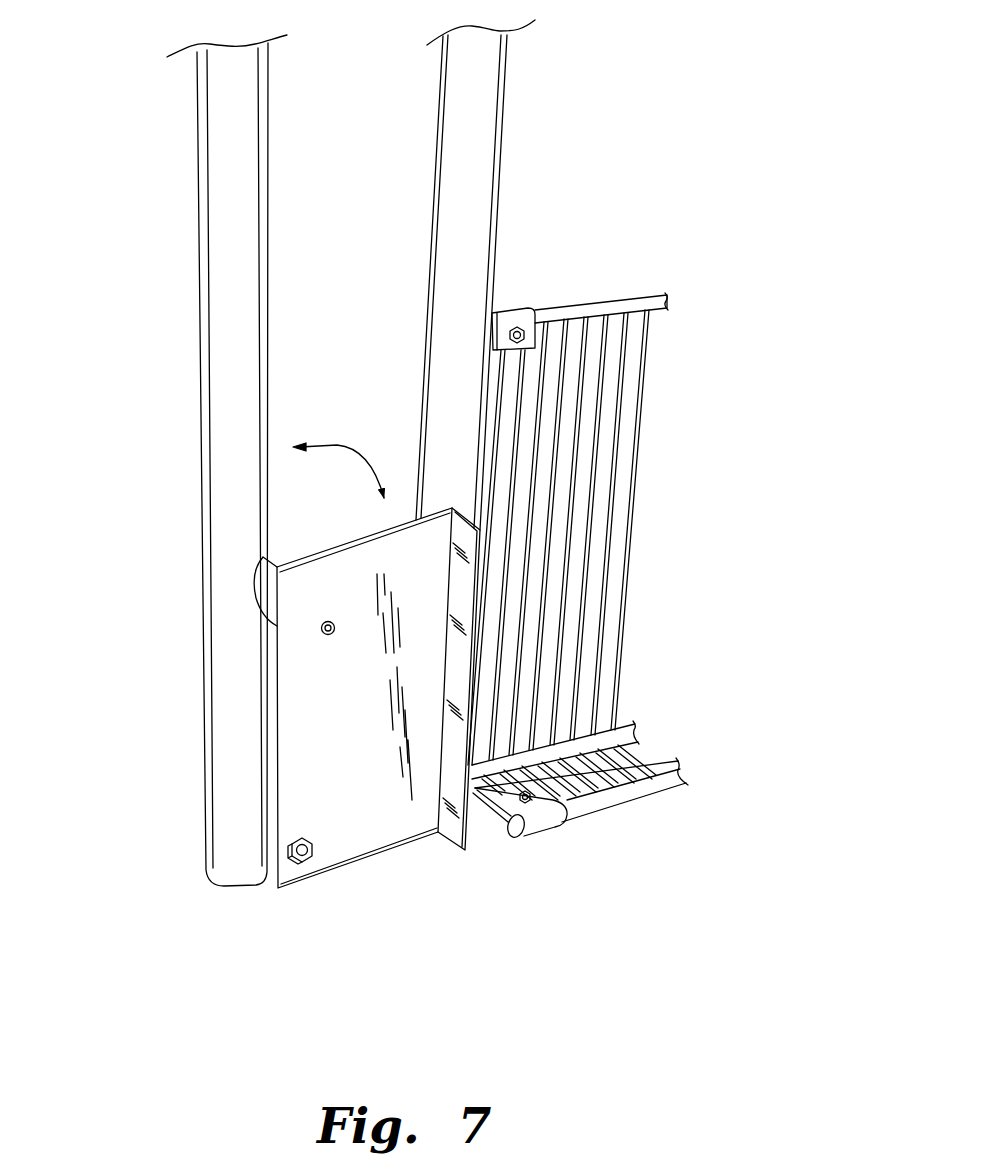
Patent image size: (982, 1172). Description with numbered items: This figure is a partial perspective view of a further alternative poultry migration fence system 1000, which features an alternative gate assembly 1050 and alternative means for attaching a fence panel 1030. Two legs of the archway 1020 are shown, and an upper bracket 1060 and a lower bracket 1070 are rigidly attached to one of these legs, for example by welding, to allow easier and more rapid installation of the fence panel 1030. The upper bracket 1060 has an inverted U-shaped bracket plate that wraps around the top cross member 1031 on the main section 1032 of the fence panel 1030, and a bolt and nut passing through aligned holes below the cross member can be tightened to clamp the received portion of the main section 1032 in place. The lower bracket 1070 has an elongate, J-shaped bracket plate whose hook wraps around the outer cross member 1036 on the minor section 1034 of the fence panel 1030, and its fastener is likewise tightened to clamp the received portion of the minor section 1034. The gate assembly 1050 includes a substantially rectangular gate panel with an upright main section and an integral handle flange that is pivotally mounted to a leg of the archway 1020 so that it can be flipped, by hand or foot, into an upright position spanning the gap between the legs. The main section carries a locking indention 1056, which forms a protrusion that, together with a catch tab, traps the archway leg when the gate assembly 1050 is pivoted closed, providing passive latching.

The poultry migration fence system 1000 is at (618, 141).
The archway 1020 is at (150, 412).
The fence panel 1030 is at (713, 401).
The top cross member 1031 is at (648, 296).
The main section 1032 is at (645, 569).
The minor section 1034 is at (706, 736).
The outer cross member 1036 is at (652, 794).
The gate assembly 1050 is at (192, 947).
The locking indention 1056 is at (331, 636).
The upper bracket 1060 is at (515, 298).
The lower bracket 1070 is at (552, 851).